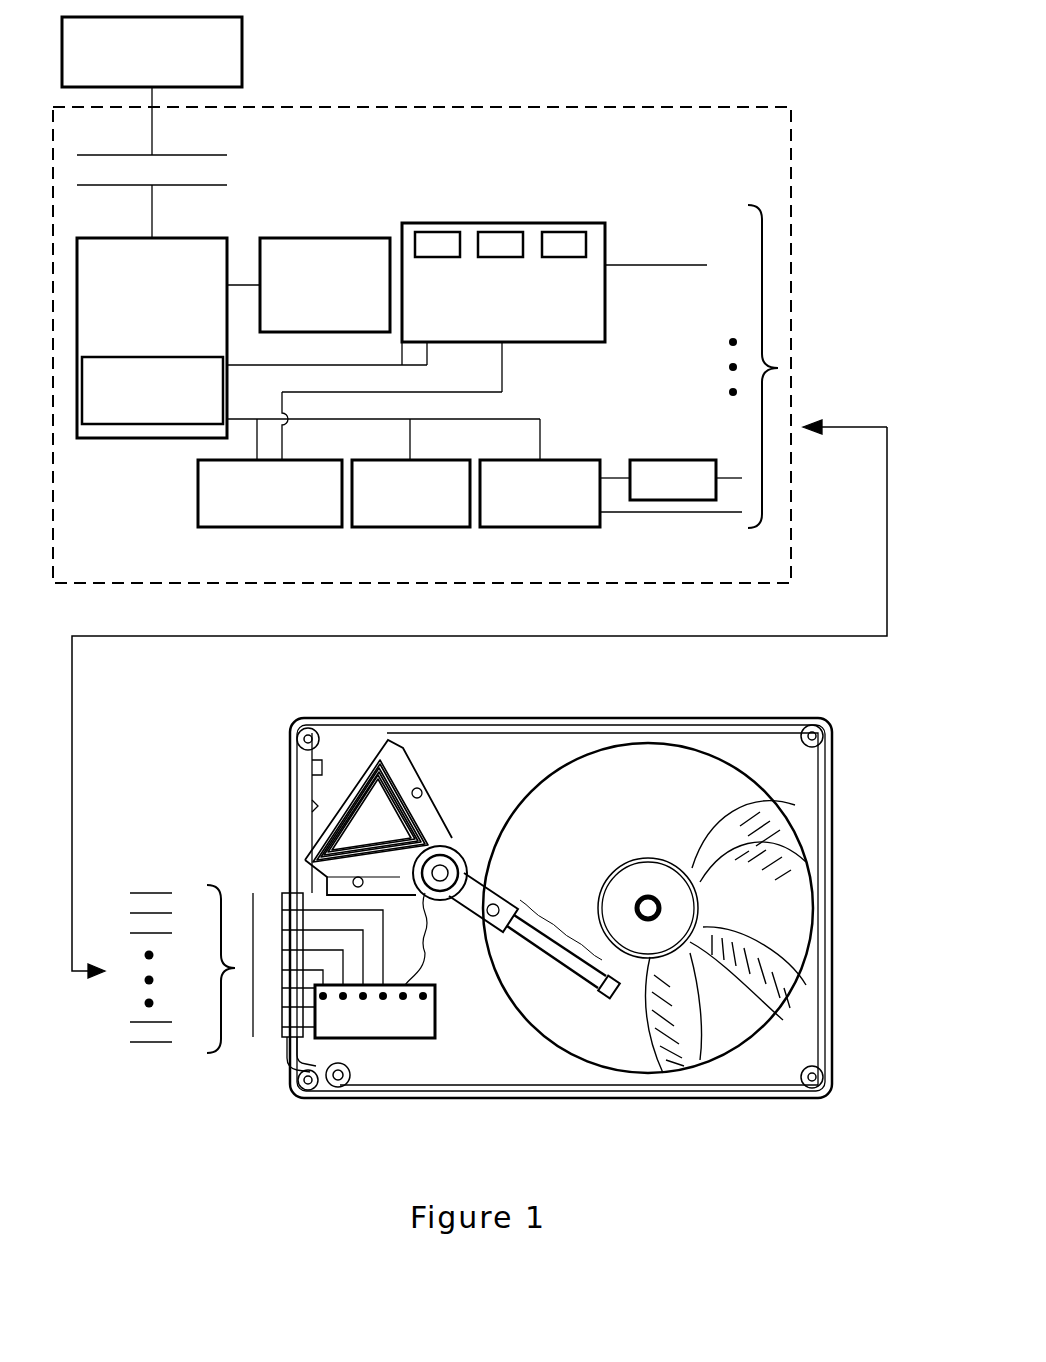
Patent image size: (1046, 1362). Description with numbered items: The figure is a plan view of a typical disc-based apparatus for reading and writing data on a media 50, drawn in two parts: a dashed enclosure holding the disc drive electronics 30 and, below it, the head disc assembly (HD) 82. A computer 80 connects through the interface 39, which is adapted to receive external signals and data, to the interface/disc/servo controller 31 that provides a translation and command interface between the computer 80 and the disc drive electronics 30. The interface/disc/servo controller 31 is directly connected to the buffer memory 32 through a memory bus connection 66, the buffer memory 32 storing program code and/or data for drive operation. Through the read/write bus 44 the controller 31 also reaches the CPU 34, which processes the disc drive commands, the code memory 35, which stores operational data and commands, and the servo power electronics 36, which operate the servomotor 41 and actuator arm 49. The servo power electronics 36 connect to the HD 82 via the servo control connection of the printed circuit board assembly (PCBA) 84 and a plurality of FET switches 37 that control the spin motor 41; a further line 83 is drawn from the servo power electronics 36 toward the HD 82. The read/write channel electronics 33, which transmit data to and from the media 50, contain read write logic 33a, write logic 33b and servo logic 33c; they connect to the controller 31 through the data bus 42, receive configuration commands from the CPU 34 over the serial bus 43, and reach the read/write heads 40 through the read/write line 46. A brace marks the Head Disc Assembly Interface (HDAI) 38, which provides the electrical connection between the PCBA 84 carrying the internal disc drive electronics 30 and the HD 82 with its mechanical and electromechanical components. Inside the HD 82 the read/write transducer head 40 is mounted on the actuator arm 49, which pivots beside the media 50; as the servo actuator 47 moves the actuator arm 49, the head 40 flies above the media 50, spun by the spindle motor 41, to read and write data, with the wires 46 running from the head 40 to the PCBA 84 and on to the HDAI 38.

The computer 80 is at (232, 32).
The disc drive electronics 30 is at (640, 160).
The interface 39 is at (235, 160).
The interface/disc/servo controller 31 is at (160, 238).
The memory bus connection 66 is at (247, 283).
The buffer memory 32 is at (325, 238).
The read/write channel electronics 33 is at (523, 237).
The read write logic 33a is at (448, 232).
The write logic 33b is at (500, 232).
The servo logic 33c is at (567, 232).
The read/write line 46 is at (493, 1140).
The data bus 42 is at (305, 365).
The serial bus 43 is at (405, 392).
The read/write bus 44 is at (541, 419).
The CPU 34 is at (262, 528).
The code memory 35 is at (430, 528).
The servo power electronics 36 is at (550, 528).
The FET switches 37 is at (681, 460).
The printed circuit board assembly (PCBA) 84 is at (735, 478).
The spindle motor line 83 is at (640, 512).
The Head Disc Assembly Interface (HDAI) 38 is at (489, 677).
The head disc assembly (HD) 82 is at (724, 693).
The media 50 is at (692, 803).
The spindle motor 41 is at (657, 905).
The servo actuator 47 is at (353, 767).
The actuator arm 49 is at (478, 890).
The read/write transducer head 40 is at (607, 990).